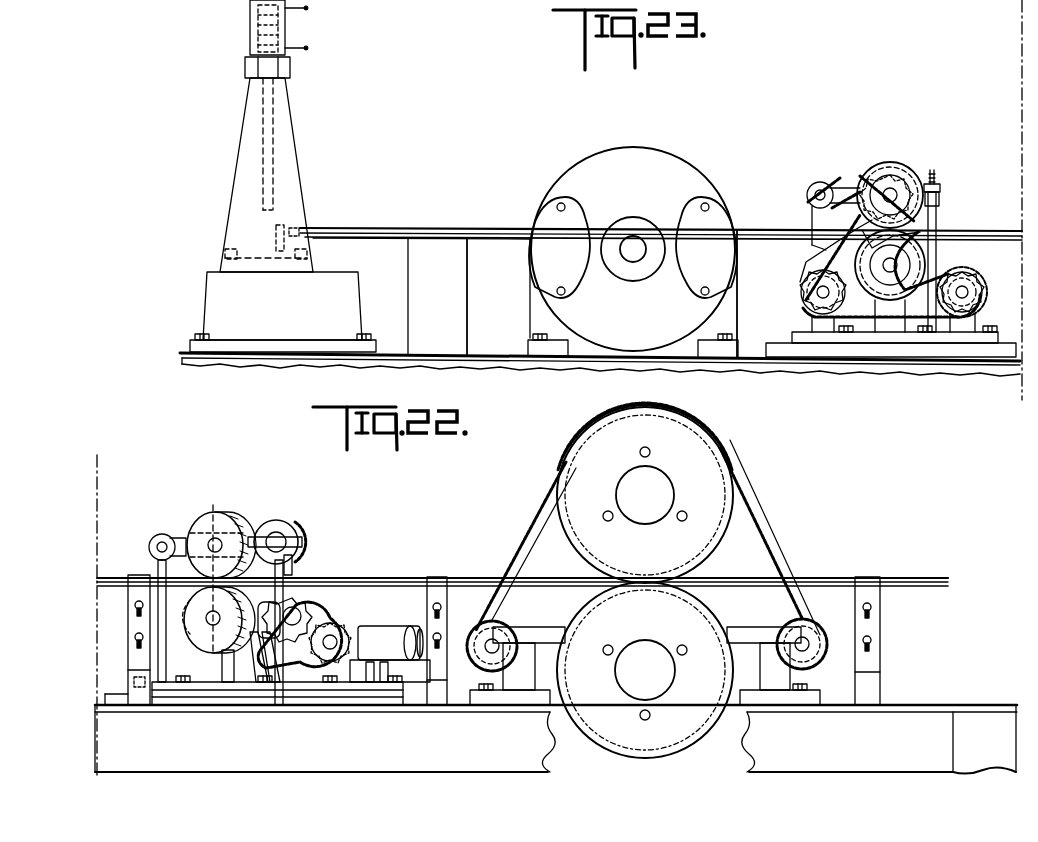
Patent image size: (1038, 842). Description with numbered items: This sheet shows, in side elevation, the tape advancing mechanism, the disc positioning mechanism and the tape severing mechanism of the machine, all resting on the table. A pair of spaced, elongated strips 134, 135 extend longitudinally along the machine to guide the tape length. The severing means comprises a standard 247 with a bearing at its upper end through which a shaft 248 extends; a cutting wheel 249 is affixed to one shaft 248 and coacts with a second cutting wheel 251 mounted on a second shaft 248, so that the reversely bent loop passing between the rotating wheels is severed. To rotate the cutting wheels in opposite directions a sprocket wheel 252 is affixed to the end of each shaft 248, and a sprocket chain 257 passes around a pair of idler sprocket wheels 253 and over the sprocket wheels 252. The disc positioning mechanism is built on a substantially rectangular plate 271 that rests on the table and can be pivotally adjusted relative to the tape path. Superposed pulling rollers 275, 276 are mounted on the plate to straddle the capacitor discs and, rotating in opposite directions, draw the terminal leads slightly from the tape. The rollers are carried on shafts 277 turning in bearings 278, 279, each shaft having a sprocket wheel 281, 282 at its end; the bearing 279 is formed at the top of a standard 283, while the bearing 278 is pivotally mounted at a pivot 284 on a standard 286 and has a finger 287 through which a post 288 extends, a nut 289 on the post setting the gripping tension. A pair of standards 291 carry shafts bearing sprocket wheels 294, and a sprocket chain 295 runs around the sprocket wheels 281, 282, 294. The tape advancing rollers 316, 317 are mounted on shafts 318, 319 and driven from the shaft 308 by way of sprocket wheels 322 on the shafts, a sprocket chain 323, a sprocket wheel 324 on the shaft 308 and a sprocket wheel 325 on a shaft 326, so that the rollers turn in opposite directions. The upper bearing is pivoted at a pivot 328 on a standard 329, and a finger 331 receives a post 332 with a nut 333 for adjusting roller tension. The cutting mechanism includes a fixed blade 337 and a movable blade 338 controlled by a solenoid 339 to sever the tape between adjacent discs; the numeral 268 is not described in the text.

In FIG. 23, the standard 268 is at (243, 126).
In FIG. 23, the solenoid 339 is at (262, 25).
In FIG. 23, the movable blade 338 is at (265, 166).
In FIG. 23, the fixed blade 337 is at (276, 232).
In FIG. 23, the elongated strip 134 is at (491, 226).
In FIG. 23, the elongated strip 135 is at (503, 240).
In FIG. 23, the pivot 328 is at (818, 182).
In FIG. 23, the standard 329 is at (812, 220).
In FIG. 23, the roller 316 is at (896, 160).
In FIG. 23, the sprocket wheel 322 is at (882, 175).
In FIG. 23, the shaft 318 is at (895, 190).
In FIG. 23, the roller 317 is at (925, 262).
In FIG. 23, the sprocket chain 323 is at (812, 252).
In FIG. 23, the sprocket wheel 325 is at (808, 278).
In FIG. 23, the shaft 326 is at (818, 293).
In FIG. 23, the sprocket wheel 324 is at (982, 285).
In FIG. 23, the shaft 308 is at (975, 300).
In FIG. 23, the shaft 319 is at (936, 223).
In FIG. 23, the finger 331 is at (938, 190).
In FIG. 23, the post 332 is at (937, 205).
In FIG. 23, the nut 333 is at (936, 180).
In FIG. 22, the pulling roller 275 is at (200, 505).
In FIG. 22, the shaft 277 is at (218, 535).
In FIG. 22, the pivot 284 is at (152, 538).
In FIG. 22, the standard 286 is at (162, 562).
In FIG. 22, the pulling roller 276 is at (205, 632).
In FIG. 22, the plate 271 is at (204, 697).
In FIG. 22, the standard 283 is at (234, 670).
In FIG. 22, the bearing 278 is at (268, 522).
In FIG. 22, the nut 289 is at (298, 525).
In FIG. 22, the finger 287 is at (300, 540).
In FIG. 22, the sprocket wheel 281 is at (300, 556).
In FIG. 22, the sprocket wheel 282 is at (300, 598).
In FIG. 22, the post 288 is at (298, 617).
In FIG. 22, the bearing 279 is at (268, 660).
In FIG. 22, the sprocket wheel 294 is at (336, 640).
In FIG. 22, the sprocket chain 295 is at (310, 672).
In FIG. 22, the standard 291 is at (380, 675).
In FIG. 22, the cutting wheel 249 is at (725, 440).
In FIG. 22, the shaft 248 is at (656, 485).
In FIG. 22, the cutting wheel 251 is at (695, 720).
In FIG. 22, the sprocket wheel 252 is at (740, 514).
In FIG. 22, the sprocket chain 257 is at (520, 540).
In FIG. 22, the standard 247 is at (715, 568).
In FIG. 22, the idler sprocket wheel 253 is at (507, 619).